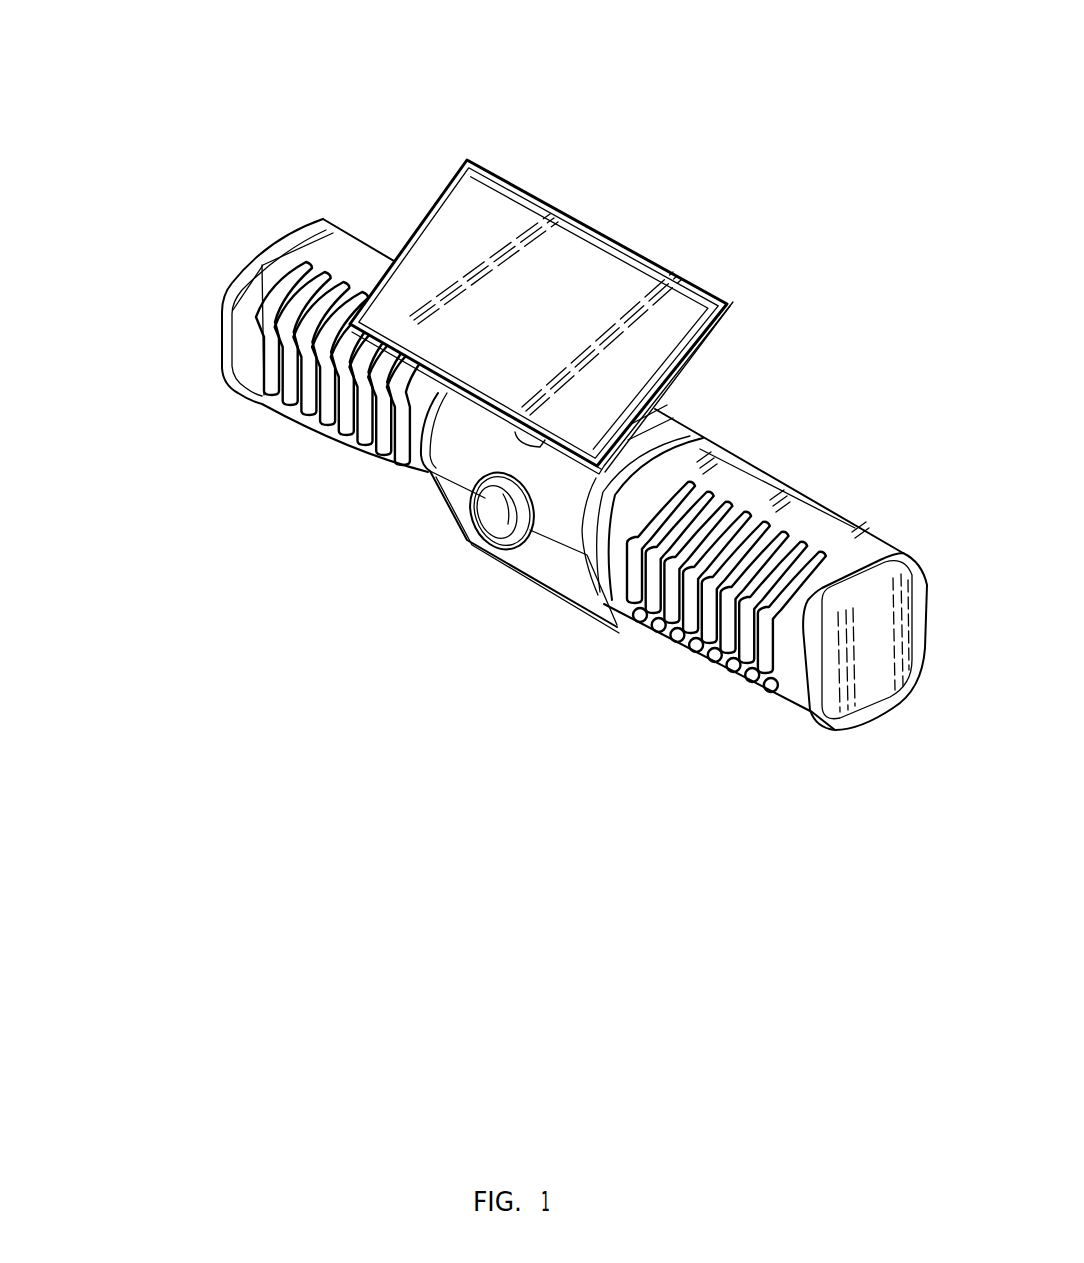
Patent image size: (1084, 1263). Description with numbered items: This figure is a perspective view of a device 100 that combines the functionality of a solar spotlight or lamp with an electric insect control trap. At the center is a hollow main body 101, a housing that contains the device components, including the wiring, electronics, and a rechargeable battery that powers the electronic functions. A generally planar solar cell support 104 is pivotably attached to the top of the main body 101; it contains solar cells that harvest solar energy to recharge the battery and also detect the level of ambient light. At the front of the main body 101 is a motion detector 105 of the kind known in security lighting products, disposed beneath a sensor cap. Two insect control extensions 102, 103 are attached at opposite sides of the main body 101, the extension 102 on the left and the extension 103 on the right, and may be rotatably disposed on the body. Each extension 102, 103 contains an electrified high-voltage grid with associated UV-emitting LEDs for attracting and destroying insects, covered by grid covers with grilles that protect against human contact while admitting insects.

The device 100 is at (515, 388).
The main body 101 is at (509, 583).
The insect control extension 102 is at (855, 537).
The insect control extension 103 is at (222, 337).
The solar cell support 104 is at (460, 166).
The motion detector 105 is at (495, 522).